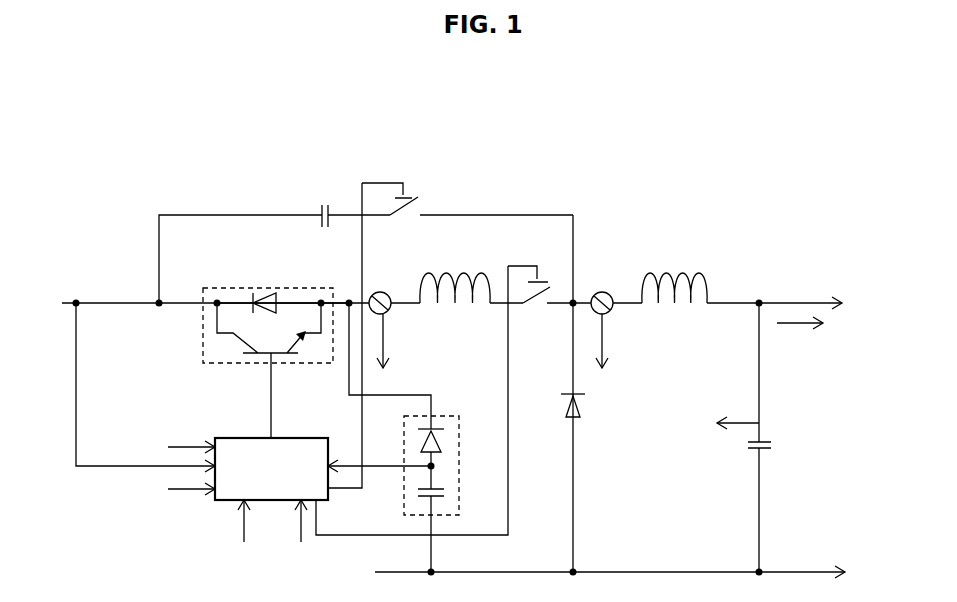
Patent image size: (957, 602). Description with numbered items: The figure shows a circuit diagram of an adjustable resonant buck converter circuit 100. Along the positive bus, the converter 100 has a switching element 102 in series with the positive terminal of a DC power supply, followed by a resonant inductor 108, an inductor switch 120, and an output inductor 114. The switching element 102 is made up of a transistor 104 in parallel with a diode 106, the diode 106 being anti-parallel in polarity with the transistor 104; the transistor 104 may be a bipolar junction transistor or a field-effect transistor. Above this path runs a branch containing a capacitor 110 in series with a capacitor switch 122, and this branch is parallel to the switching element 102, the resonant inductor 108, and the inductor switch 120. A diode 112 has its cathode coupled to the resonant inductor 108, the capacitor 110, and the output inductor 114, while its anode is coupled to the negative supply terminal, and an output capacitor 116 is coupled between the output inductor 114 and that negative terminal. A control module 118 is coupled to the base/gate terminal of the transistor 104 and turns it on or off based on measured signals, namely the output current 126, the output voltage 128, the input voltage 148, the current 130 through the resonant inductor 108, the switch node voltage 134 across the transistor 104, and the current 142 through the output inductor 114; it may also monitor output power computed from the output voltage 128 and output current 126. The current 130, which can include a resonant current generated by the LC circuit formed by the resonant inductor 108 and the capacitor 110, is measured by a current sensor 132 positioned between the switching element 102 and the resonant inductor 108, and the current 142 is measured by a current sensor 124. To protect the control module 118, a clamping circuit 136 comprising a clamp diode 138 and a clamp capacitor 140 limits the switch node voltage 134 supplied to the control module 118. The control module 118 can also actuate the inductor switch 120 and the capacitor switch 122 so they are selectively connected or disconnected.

The adjustable resonant buck converter circuit 100 is at (153, 190).
The switching element 102 is at (203, 312).
The transistor 104 is at (231, 356).
The diode 106 is at (268, 290).
The resonant inductor 108 is at (458, 285).
The capacitor 110 is at (320, 209).
The diode 112 is at (578, 417).
The output inductor 114 is at (705, 278).
The output capacitor 116 is at (763, 440).
The control module 118 is at (296, 436).
The inductor switch 120 is at (545, 308).
The capacitor switch 122 is at (418, 208).
The current sensor 124 is at (598, 291).
The output current 126 is at (795, 323).
The output voltage 128 is at (748, 423).
The current 130 is at (384, 322).
The current sensor 132 is at (392, 298).
The switch node voltage 134 is at (397, 400).
The clamping circuit 136 is at (459, 496).
The clamp diode 138 is at (436, 448).
The clamp capacitor 140 is at (440, 508).
The current 142 is at (607, 348).
The input voltage 148 is at (145, 388).